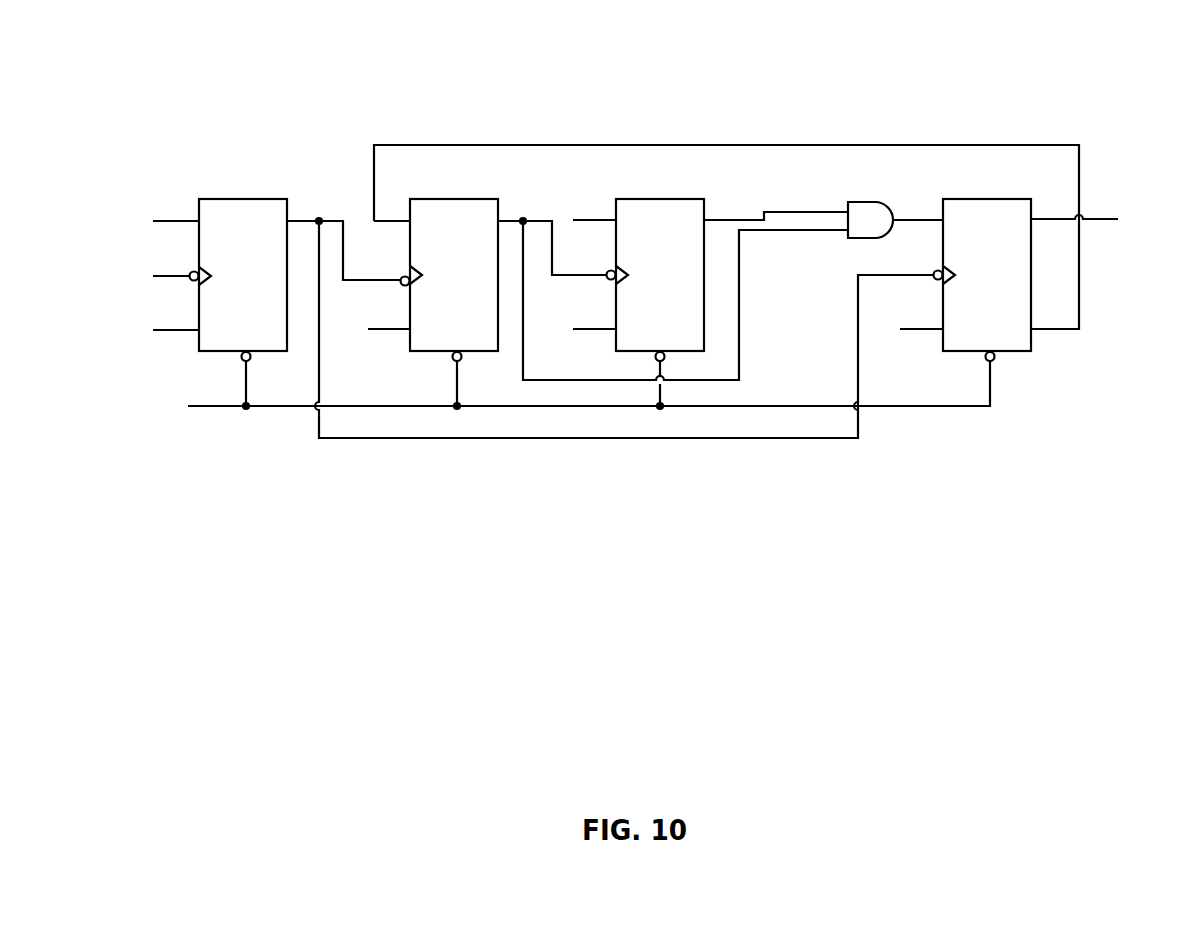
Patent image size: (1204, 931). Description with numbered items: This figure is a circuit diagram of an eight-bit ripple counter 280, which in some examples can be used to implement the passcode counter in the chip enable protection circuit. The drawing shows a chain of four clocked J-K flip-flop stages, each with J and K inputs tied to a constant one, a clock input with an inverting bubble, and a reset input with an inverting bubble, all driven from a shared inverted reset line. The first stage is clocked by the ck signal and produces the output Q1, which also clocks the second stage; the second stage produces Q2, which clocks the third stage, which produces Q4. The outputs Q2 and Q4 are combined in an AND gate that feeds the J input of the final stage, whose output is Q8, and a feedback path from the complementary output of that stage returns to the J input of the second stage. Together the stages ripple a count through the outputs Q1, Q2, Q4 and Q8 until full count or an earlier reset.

The 8-bit ripple counter 280 is at (640, 234).
The first flip-flop output Q1 is at (610, 317).
The second flip-flop output Q2 is at (673, 287).
The third flip-flop output Q4 is at (776, 206).
The fourth flip-flop output Q8 is at (1095, 223).